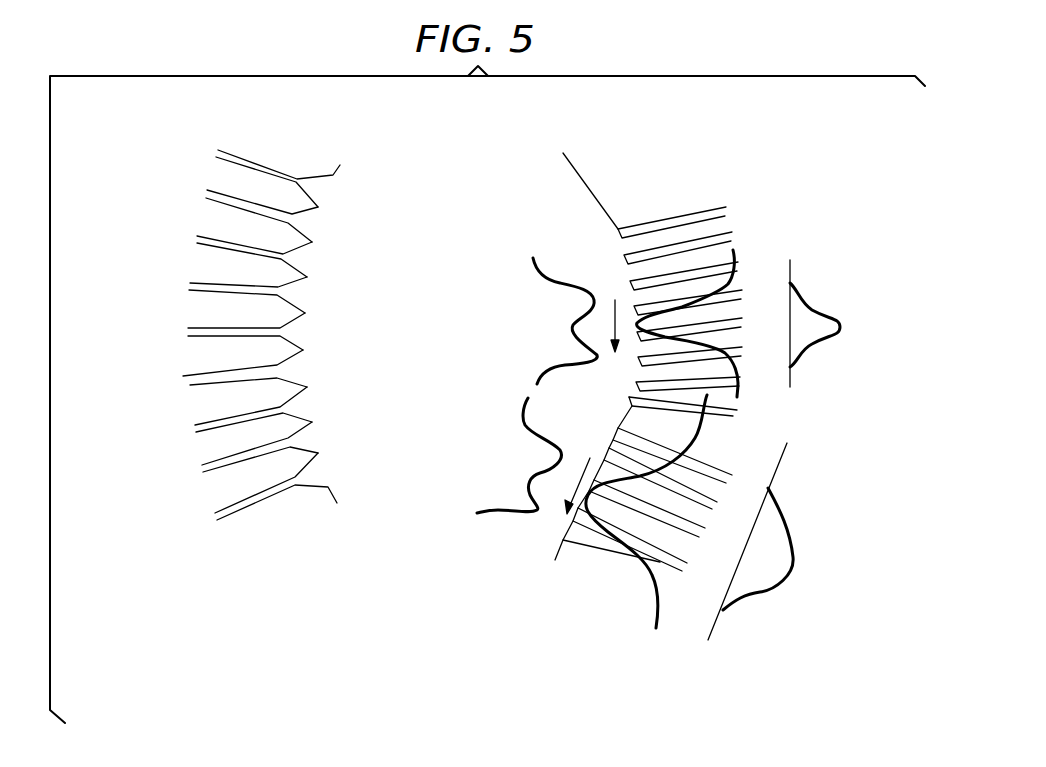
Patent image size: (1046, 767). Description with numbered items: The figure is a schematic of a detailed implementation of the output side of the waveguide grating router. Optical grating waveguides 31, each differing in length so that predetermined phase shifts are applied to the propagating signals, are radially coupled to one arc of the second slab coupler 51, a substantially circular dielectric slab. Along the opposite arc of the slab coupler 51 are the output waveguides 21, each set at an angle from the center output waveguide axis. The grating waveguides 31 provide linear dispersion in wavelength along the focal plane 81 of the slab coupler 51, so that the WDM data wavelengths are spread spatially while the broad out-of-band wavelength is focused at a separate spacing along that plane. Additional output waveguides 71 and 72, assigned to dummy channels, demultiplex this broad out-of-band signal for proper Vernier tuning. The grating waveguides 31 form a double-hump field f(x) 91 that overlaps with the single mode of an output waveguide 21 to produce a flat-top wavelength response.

The optical grating waveguides 31 is at (183, 376).
The second slab coupler 51 is at (583, 140).
The output port for dummy channel 72 is at (722, 200).
The double-hump field f(x) 91 is at (543, 331).
The focal plane 81 is at (547, 528).
The output waveguides 21 is at (823, 377).
The output port for dummy channel 71 is at (733, 623).